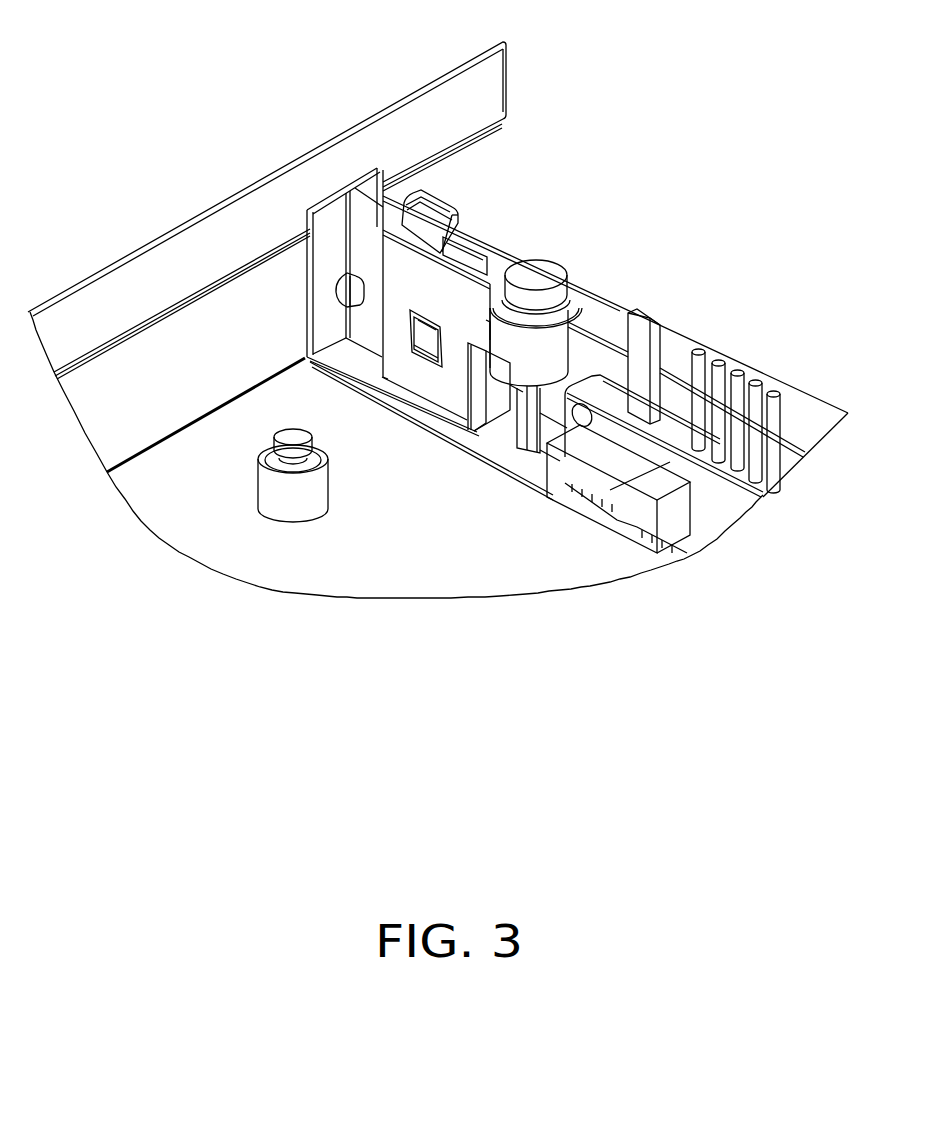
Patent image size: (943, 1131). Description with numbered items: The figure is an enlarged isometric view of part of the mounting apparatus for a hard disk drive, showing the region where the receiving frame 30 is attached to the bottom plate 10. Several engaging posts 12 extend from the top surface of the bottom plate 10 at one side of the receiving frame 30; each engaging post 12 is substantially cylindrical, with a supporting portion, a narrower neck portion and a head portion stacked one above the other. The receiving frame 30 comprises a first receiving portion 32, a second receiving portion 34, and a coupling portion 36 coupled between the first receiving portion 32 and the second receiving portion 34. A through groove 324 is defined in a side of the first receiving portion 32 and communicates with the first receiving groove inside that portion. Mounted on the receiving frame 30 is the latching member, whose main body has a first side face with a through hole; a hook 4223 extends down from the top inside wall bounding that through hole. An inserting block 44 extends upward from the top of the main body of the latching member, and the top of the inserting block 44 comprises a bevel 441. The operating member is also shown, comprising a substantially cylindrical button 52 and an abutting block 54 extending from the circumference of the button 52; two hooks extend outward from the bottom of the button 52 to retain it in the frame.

The bottom plate 10 is at (333, 557).
The engaging post 12 is at (275, 498).
The receiving frame 30 is at (607, 333).
The first receiving portion 32 is at (398, 262).
The second receiving portion 34 is at (606, 362).
The coupling portion 36 is at (440, 350).
The through groove 324 is at (482, 327).
The hook 4223 is at (413, 340).
The inserting block 44 is at (438, 201).
The bevel 441 is at (425, 216).
The button 52 is at (547, 273).
The abutting block 54 is at (500, 272).